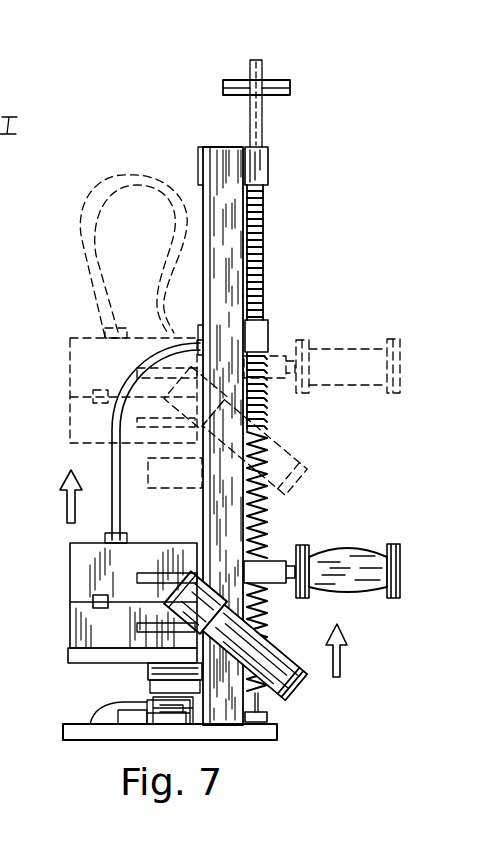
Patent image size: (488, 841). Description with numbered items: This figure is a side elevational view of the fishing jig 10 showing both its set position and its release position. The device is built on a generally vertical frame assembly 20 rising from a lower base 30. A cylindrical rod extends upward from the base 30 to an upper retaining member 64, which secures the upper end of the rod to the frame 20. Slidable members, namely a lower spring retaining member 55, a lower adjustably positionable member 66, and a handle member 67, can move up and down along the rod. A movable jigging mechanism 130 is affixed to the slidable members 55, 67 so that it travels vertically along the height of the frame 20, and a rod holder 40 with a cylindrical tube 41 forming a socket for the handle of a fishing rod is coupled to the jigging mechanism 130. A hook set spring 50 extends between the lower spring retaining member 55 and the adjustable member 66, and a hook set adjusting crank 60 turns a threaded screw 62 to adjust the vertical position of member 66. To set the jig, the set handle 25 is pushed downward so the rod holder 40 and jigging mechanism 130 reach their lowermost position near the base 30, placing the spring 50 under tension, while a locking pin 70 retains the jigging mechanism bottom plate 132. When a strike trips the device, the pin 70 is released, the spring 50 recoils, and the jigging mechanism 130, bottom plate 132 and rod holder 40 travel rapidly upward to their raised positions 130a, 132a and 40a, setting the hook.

The fishing jig 10 is at (347, 104).
The frame assembly 20 is at (232, 223).
The set handle 25 is at (335, 548).
The lower base 30 is at (263, 740).
The rod holder 40 is at (280, 645).
The released position of rod holder 40a is at (256, 432).
The tube 41 is at (302, 680).
The hook set spring 50 is at (265, 498).
The lower spring retaining member 55 is at (263, 715).
The hook set adjusting crank 60 is at (277, 82).
The threaded screw 62 is at (265, 270).
The upper retaining member 64 is at (262, 165).
The lower adjustably positionable member 66 is at (270, 325).
The handle member 67 is at (284, 560).
The locking pin 70 is at (62, 535).
The movable jigging mechanism 130 is at (82, 617).
The released position of jigging mechanism 130a is at (85, 418).
The jigging mechanism bottom plate 132 is at (153, 676).
The released position of bottom plate 132a is at (120, 465).